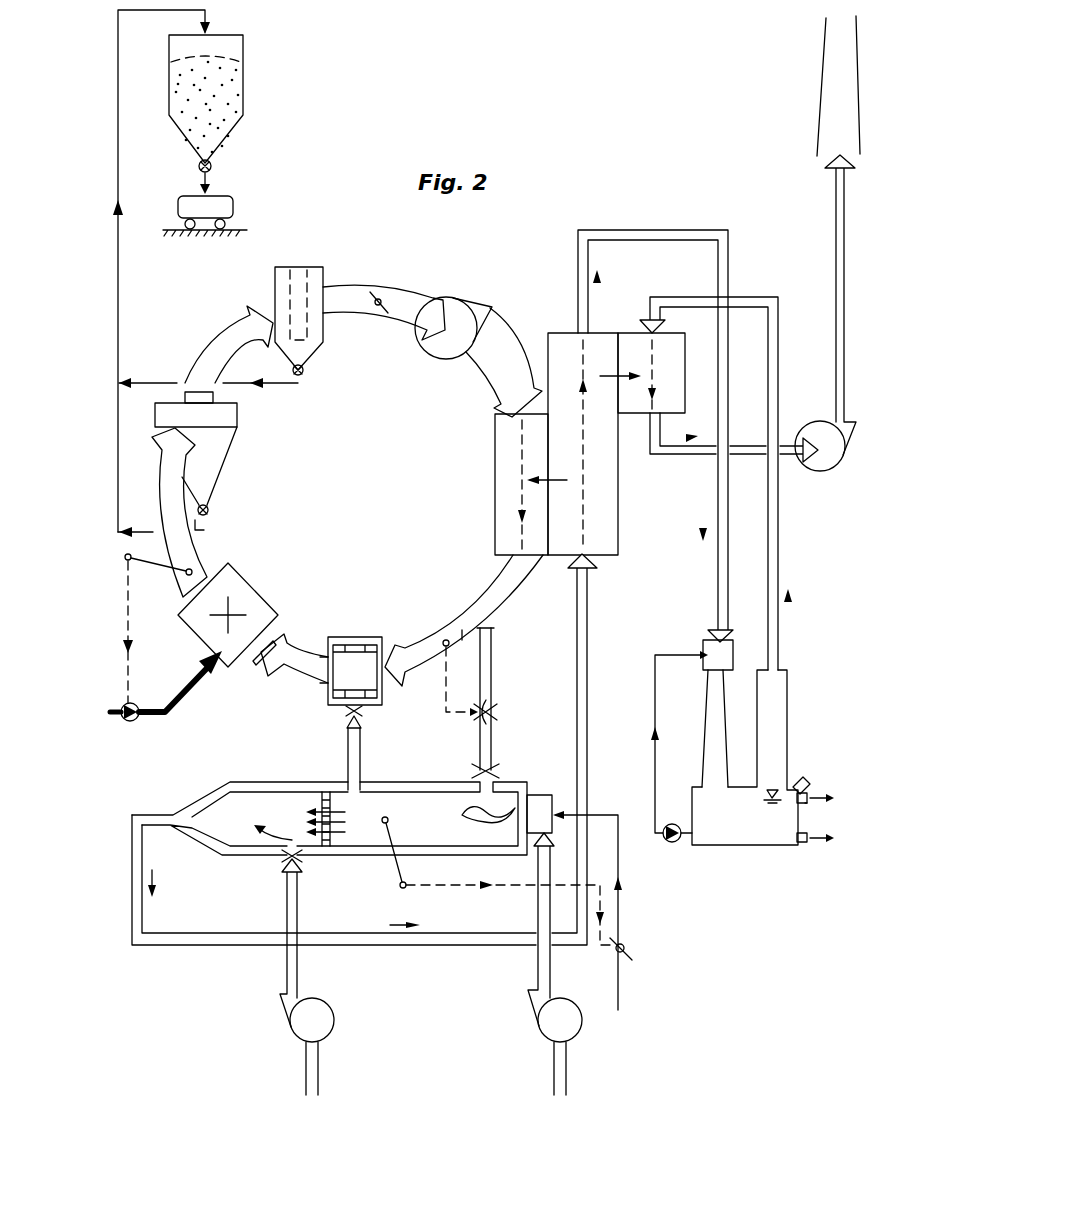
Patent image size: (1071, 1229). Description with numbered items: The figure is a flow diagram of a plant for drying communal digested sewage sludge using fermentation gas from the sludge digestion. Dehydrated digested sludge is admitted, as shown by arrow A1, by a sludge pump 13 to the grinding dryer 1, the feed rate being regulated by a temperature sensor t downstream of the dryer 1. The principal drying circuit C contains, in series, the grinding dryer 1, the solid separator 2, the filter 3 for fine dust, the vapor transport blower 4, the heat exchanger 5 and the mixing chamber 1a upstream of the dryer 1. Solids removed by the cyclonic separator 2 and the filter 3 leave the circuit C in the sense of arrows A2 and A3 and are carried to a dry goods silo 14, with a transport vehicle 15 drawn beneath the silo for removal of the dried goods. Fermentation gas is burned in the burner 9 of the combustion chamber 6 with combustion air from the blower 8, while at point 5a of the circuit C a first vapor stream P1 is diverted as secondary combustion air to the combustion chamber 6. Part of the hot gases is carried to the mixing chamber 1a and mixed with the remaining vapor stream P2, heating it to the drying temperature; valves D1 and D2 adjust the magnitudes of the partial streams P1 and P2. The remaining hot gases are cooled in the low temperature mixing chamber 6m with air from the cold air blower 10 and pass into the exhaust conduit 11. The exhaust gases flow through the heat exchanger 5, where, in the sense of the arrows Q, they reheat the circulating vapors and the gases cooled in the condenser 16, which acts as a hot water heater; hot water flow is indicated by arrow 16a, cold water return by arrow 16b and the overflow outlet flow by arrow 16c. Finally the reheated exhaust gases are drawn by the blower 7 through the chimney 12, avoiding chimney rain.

The grinding dryer 1 is at (243, 587).
The mixing chamber 1a is at (357, 638).
The solid separator 2 is at (217, 463).
The filter 3 is at (315, 345).
The vapor transport blower 4 is at (437, 356).
The heat exchanger 5 is at (495, 478).
The point of the circuit 5a is at (500, 625).
The combustion chamber 6 is at (398, 782).
The low temperature mixing chamber 6m is at (252, 790).
The blower 7 is at (800, 428).
The blower 8 is at (562, 1000).
The burner 9 is at (541, 790).
The cold air blower 10 is at (313, 1005).
The exhaust conduit 11 is at (720, 622).
The chimney 12 is at (831, 97).
The sludge pump 13 is at (141, 706).
The dry goods silo 14 is at (243, 85).
The transport vehicle 15 is at (225, 200).
The condenser 16 is at (798, 707).
The arrow 16a is at (800, 845).
The arrow 16b is at (805, 774).
The arrow 16c is at (804, 801).
The arrow A1 is at (195, 700).
The arrow A2 is at (147, 528).
The arrow A3 is at (155, 382).
The circuit C is at (219, 349).
The valve D1 is at (496, 716).
The valve D2 is at (440, 642).
The first vapor stream P1 is at (492, 672).
The remaining partial vapor stream P2 is at (462, 630).
The arrow Q is at (585, 416).
The temperature sensor t is at (362, 749).